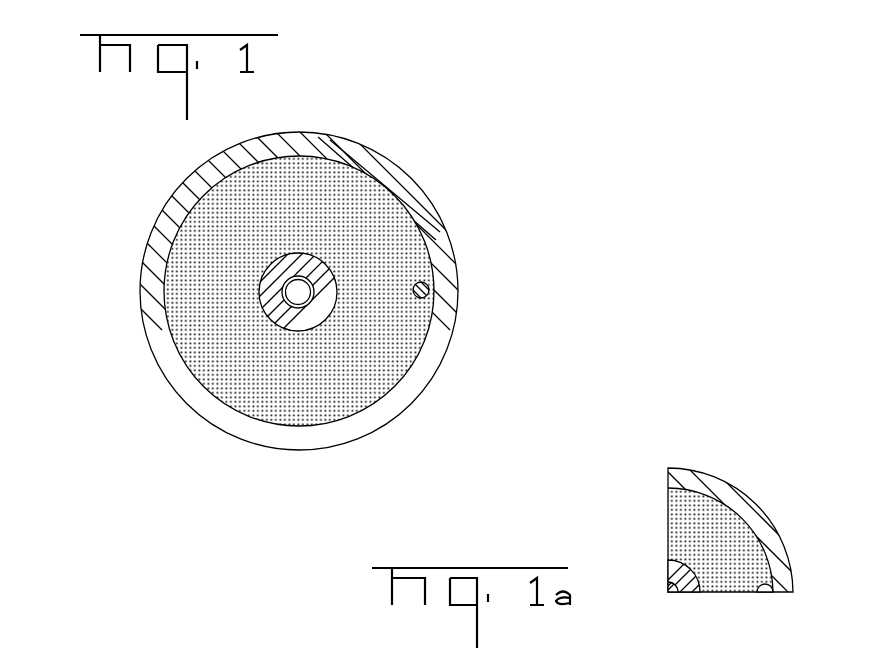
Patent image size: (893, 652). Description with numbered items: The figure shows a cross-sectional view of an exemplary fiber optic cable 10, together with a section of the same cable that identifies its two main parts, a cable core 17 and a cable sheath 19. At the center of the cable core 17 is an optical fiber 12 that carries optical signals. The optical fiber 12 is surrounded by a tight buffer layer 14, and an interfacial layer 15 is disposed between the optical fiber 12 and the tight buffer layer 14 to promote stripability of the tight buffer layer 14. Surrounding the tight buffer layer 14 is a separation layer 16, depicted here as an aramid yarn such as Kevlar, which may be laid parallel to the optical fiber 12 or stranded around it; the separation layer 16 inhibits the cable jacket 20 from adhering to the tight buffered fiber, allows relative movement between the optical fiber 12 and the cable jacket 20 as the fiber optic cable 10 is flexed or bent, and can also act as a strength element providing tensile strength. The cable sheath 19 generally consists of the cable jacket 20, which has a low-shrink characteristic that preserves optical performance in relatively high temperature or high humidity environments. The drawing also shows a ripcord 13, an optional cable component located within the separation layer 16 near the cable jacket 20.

In FIG. 1, the fiber optic cable 10 is at (421, 168).
In FIG. 1, the optical fiber 12 is at (311, 283).
In FIG. 1A, the optical fiber 12 is at (678, 590).
In FIG. 1, the ripcord 13 is at (432, 288).
In FIG. 1, the tight buffer layer 14 is at (273, 275).
In FIG. 1A, the tight buffer layer 14 is at (687, 582).
In FIG. 1, the interfacial layer 15 is at (318, 305).
In FIG. 1, the separation layer 16 is at (277, 183).
In FIG. 1A, the separation layer 16 is at (733, 580).
In FIG. 1A, the cable core 17 is at (668, 488).
In FIG. 1A, the cable sheath 19 is at (668, 468).
In FIG. 1, the cable jacket 20 is at (242, 438).
In FIG. 1A, the cable jacket 20 is at (757, 510).